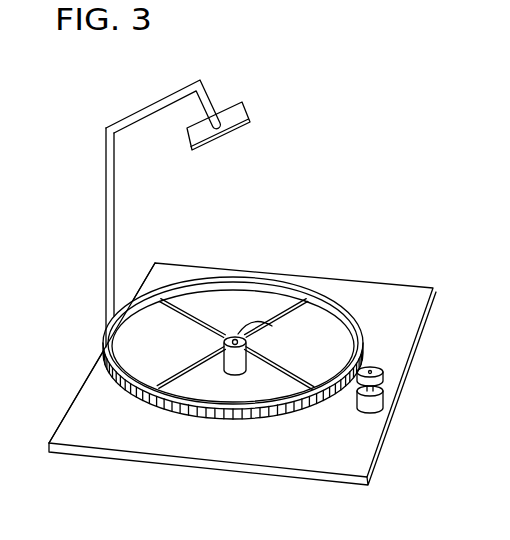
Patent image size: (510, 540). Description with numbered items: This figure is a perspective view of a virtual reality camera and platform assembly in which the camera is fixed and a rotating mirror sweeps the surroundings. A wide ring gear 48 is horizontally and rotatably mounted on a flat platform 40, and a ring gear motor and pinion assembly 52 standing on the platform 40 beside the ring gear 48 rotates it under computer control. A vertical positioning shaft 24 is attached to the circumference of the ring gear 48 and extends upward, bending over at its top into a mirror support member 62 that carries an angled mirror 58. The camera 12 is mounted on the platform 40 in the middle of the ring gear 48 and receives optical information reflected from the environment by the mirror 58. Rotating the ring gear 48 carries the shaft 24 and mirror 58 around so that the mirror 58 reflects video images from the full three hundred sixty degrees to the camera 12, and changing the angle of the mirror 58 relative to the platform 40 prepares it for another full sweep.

The platform 40 is at (323, 450).
The vertical positioning shaft 24 is at (114, 197).
The mirror support member 62 is at (155, 105).
The mirror 58 is at (235, 125).
The ring gear 48 is at (327, 293).
The camera 12 is at (250, 322).
The ring gear motor and pinion assembly 52 is at (378, 403).